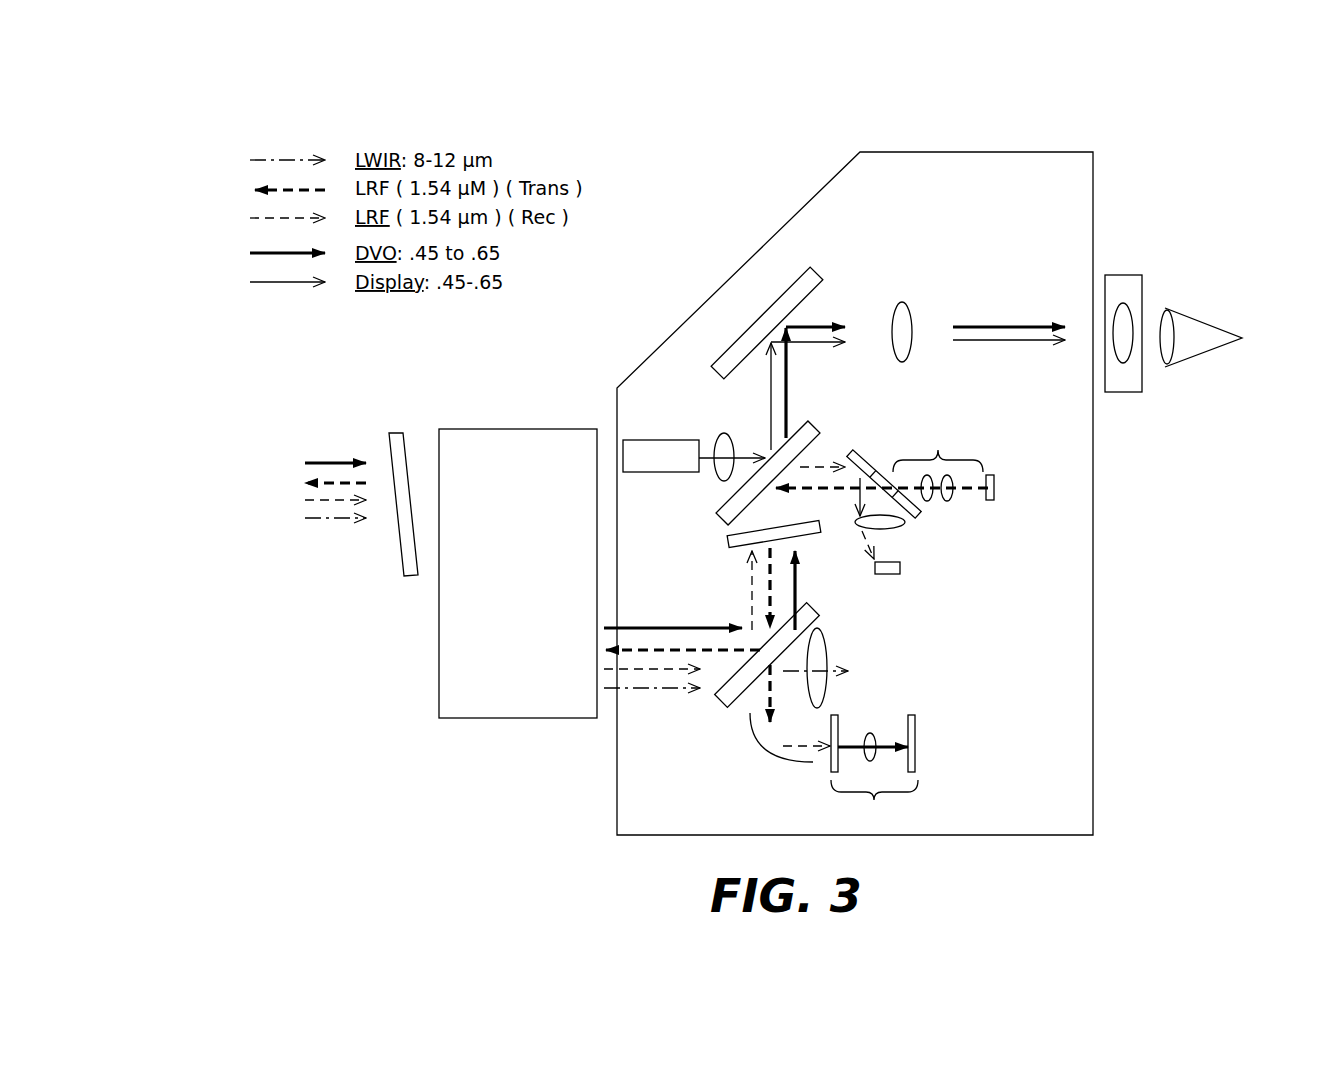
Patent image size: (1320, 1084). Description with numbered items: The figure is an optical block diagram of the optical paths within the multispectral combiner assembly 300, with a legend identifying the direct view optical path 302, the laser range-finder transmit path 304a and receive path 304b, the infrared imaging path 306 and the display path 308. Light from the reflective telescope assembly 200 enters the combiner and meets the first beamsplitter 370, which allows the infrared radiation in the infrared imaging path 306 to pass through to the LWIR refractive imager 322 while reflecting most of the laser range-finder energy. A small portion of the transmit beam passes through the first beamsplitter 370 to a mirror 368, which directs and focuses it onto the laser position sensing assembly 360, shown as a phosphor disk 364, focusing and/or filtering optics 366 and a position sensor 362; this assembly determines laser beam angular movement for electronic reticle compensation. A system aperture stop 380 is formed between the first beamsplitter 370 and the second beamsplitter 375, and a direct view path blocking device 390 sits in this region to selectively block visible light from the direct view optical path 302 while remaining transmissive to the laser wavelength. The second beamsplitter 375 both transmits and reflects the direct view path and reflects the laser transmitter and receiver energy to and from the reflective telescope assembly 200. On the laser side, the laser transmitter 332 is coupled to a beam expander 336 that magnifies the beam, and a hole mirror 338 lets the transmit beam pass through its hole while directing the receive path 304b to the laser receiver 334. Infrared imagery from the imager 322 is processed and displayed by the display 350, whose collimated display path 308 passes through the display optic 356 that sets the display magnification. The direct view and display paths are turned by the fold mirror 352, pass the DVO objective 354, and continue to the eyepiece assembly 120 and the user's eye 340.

The multispectral combiner assembly 300 is at (852, 468).
The infrared imaging path 306 is at (260, 158).
The laser range-finder transmit path 304a is at (262, 188).
The laser range-finder receive path 304b is at (262, 216).
The direct view optical path 302 is at (262, 252).
The display path 308 is at (262, 281).
The reflective telescope assembly 200 is at (525, 428).
The display 350 is at (628, 424).
The fold mirror 352 is at (782, 292).
The DVO objective 354 is at (906, 305).
The display optic 356 is at (722, 432).
The second beamsplitter 375 is at (815, 425).
The beam expander 336 is at (938, 460).
The laser transmitter 332 is at (995, 478).
The hole mirror 338 is at (920, 515).
The laser receiver 334 is at (893, 576).
The direct view path blocking device 390 is at (805, 537).
The system aperture stop 380 is at (838, 600).
The first beamsplitter 370 is at (722, 700).
The LWIR refractive imager 322 is at (822, 643).
The mirror 368 is at (773, 755).
The laser position sensing assembly 360 is at (879, 754).
The phosphor disk 364 is at (832, 772).
The focusing and/or filtering optics 366 is at (875, 735).
The position sensor 362 is at (918, 733).
The eyepiece assembly 120 is at (1130, 275).
The eye 340 is at (1190, 357).